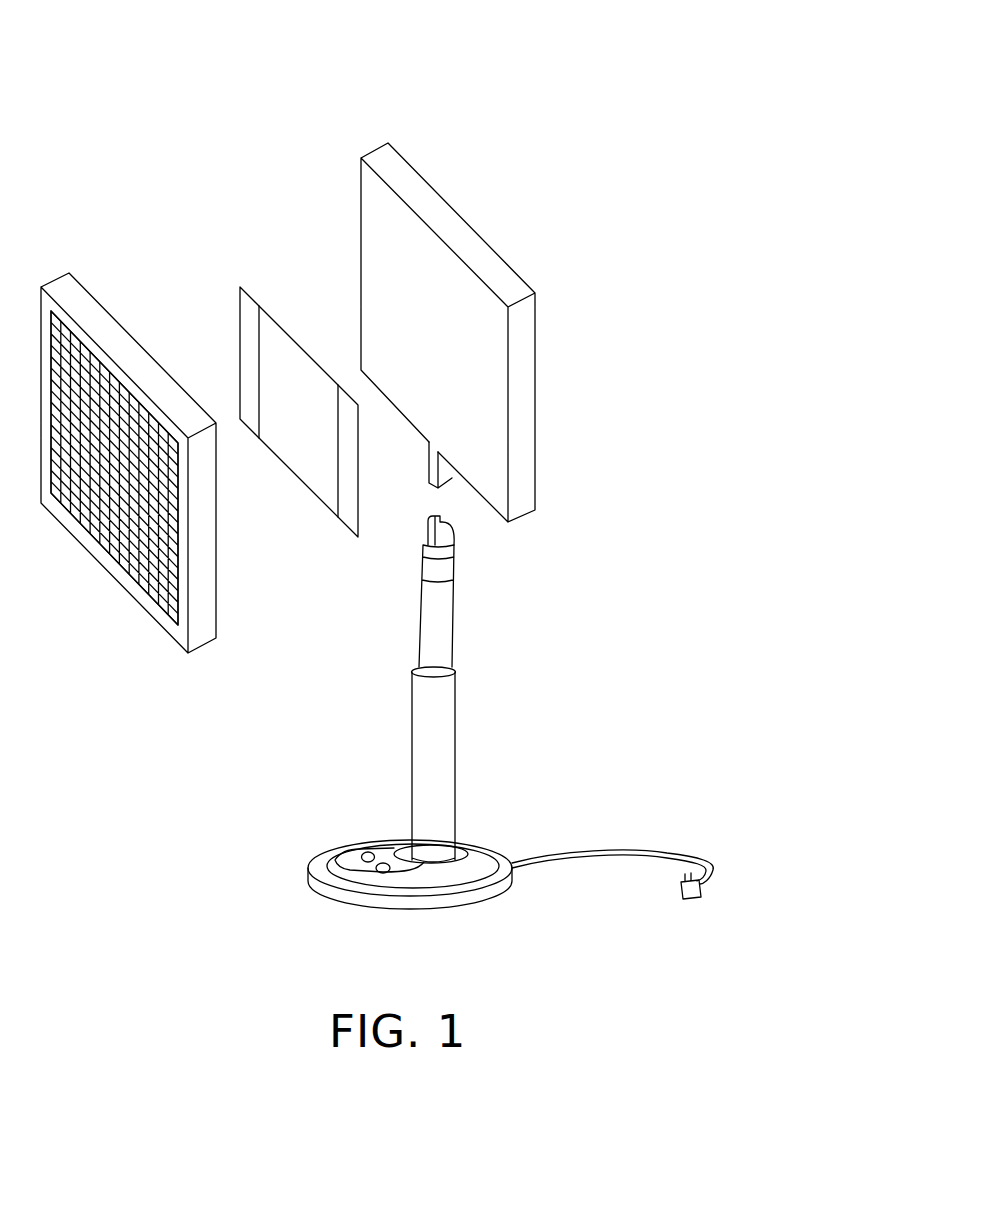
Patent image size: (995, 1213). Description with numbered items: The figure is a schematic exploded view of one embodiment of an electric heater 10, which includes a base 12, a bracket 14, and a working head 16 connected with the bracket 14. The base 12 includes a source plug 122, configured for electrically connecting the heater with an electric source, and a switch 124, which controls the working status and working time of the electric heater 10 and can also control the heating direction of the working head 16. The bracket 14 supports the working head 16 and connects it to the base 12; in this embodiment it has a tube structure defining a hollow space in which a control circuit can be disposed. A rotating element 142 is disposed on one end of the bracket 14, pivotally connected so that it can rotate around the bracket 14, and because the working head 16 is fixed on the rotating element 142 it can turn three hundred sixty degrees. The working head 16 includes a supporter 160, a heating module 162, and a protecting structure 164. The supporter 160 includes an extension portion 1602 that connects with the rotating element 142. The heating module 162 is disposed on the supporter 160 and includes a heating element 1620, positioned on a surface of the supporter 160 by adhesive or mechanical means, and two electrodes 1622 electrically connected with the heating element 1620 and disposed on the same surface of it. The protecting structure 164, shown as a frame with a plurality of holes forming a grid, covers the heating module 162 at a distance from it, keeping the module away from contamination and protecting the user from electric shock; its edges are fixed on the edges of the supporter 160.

The electric heater 10 is at (582, 63).
The base 12 is at (320, 863).
The source plug 122 is at (700, 889).
The switch 124 is at (368, 851).
The bracket 14 is at (437, 717).
The rotating element 142 is at (446, 537).
The working head 16 is at (240, 145).
The supporter 160 is at (378, 253).
The extension portion 1602 is at (450, 477).
The heating module 162 is at (290, 308).
The heating element 1620 is at (303, 450).
The electrodes 1622 is at (250, 322).
The protecting structure 164 is at (92, 313).